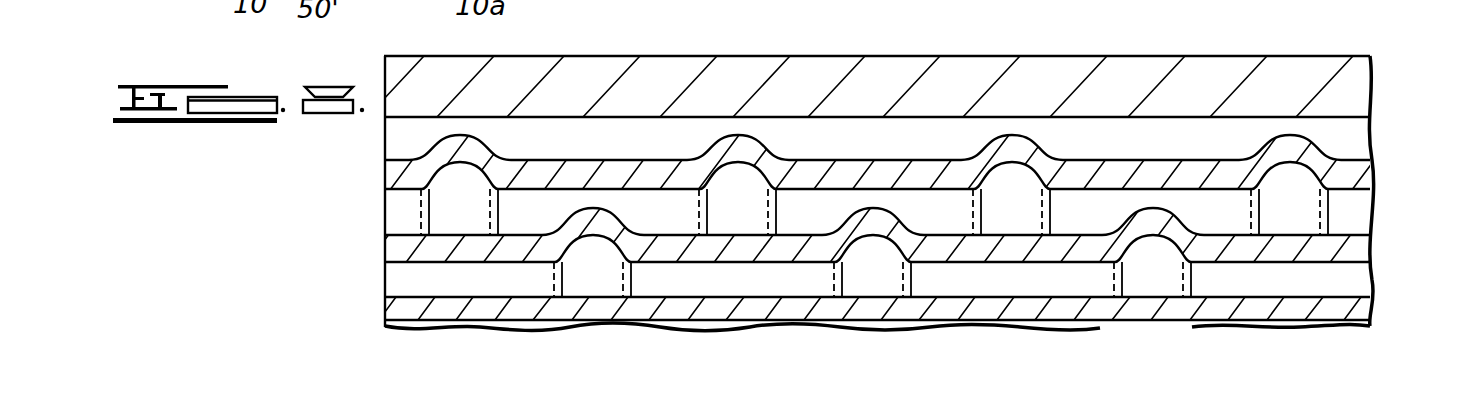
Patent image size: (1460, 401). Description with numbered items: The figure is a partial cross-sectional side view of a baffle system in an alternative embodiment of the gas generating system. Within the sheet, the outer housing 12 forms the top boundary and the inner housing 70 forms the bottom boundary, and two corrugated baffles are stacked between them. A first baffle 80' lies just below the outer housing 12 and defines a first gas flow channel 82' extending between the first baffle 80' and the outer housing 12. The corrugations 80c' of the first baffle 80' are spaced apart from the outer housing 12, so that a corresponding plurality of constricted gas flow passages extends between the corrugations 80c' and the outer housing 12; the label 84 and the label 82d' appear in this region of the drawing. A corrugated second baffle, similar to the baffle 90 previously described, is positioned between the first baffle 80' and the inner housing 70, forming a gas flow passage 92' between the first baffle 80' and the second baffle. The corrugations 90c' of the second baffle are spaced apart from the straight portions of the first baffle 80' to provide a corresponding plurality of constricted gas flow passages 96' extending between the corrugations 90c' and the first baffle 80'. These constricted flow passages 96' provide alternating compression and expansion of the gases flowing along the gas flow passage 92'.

The outer housing 12 is at (693, 20).
The inner housing 70 is at (382, 308).
The first baffle 80' is at (882, 115).
The first gas flow channel 82' is at (877, 86).
The corrugations 80c' is at (1031, 123).
The adhesive on intermediate layer 82d' is at (1183, 100).
The protrusion cap 84 is at (1027, 128).
The baffle 90 is at (1384, 248).
The corrugations 90c' is at (1149, 297).
The gas flow passage 92' is at (908, 191).
The constricted gas flow passages 96' is at (1235, 212).